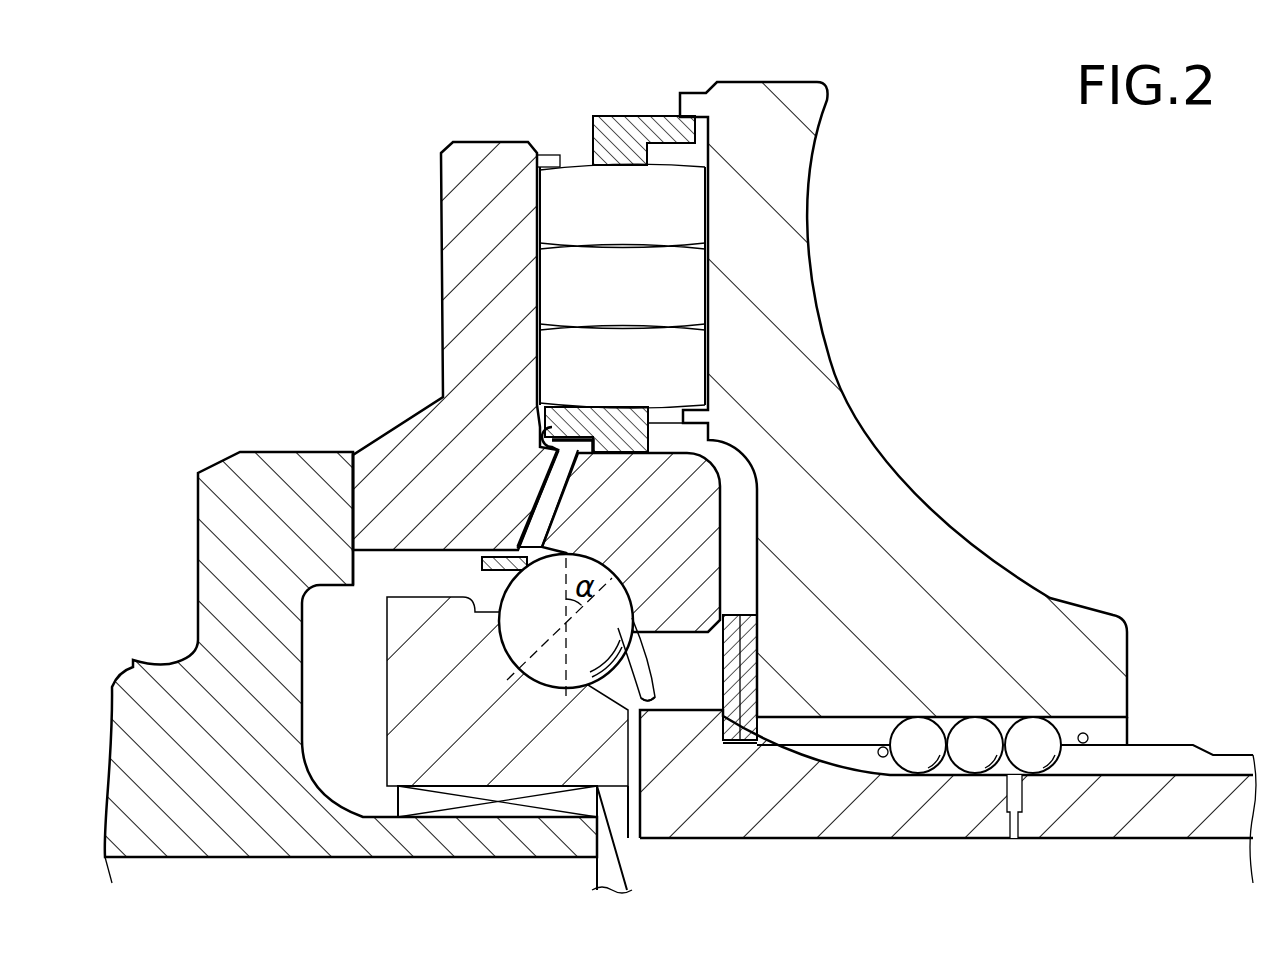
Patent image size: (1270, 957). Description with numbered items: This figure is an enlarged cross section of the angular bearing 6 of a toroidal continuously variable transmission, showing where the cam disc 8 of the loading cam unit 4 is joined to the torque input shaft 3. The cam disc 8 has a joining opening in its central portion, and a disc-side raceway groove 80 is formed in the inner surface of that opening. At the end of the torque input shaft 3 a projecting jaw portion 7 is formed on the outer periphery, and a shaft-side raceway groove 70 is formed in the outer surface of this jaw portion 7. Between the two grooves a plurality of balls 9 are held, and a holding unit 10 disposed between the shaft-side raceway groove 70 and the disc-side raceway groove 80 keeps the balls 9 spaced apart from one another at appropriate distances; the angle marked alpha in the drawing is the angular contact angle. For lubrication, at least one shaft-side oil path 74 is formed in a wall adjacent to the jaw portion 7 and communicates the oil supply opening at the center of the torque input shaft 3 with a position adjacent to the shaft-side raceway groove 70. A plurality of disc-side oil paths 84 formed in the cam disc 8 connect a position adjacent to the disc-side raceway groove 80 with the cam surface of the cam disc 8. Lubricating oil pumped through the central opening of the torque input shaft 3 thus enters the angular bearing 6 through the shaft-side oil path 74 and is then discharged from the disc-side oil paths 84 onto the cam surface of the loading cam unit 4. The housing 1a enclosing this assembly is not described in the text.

The housing 1a is at (888, 462).
The torque input shaft 3 is at (1160, 743).
The loading cam unit 4 is at (556, 118).
The angular bearing 6 is at (463, 555).
The projecting jaw portion 7 is at (472, 602).
The cam disc 8 is at (441, 200).
The balls 9 is at (522, 571).
The holding unit 10 is at (648, 669).
The shaft-side raceway groove 70 is at (643, 698).
The shaft-side oil path 74 is at (640, 847).
The disc-side raceway groove 80 is at (637, 639).
The disc-side oil paths 84 is at (540, 432).